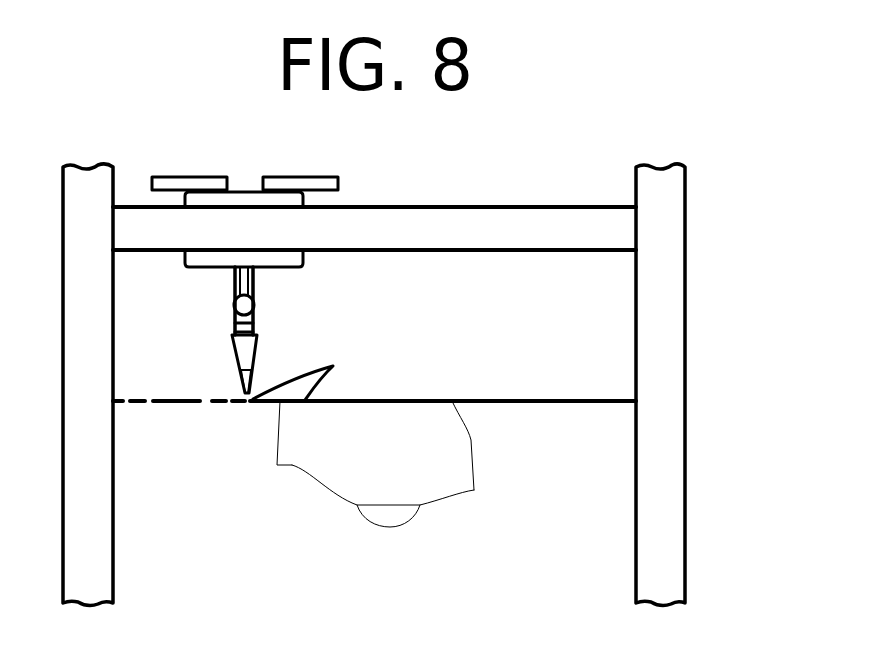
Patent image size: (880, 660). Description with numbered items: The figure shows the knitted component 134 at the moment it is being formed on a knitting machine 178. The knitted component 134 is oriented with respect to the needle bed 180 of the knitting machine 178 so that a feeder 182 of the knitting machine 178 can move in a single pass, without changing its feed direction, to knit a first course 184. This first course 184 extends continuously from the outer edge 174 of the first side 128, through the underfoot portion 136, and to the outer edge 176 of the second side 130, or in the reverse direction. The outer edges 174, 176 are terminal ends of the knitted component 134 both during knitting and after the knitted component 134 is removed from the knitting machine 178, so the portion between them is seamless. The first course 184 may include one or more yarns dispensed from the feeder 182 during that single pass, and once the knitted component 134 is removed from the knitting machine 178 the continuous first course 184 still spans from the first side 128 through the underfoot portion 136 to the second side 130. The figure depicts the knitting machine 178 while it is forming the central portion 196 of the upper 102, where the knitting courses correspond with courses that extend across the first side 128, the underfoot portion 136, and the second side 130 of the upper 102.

The upper 102 is at (432, 368).
The first side 128 is at (305, 458).
The second side 130 is at (458, 484).
The knitted component 134 is at (393, 418).
The underfoot portion 136 is at (393, 478).
The outer edge 174 is at (280, 430).
The outer edge 176 is at (470, 437).
The knitting machine 178 is at (668, 348).
The needle bed 180 is at (186, 398).
The feeder 182 is at (248, 275).
The first course 184 is at (318, 369).
The central portion 196 is at (378, 442).